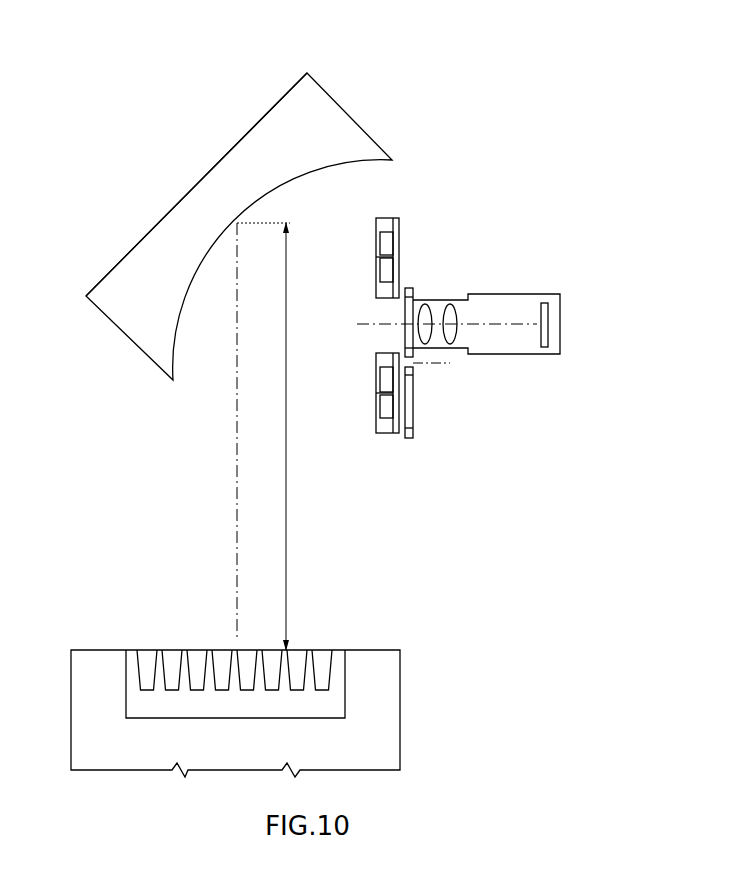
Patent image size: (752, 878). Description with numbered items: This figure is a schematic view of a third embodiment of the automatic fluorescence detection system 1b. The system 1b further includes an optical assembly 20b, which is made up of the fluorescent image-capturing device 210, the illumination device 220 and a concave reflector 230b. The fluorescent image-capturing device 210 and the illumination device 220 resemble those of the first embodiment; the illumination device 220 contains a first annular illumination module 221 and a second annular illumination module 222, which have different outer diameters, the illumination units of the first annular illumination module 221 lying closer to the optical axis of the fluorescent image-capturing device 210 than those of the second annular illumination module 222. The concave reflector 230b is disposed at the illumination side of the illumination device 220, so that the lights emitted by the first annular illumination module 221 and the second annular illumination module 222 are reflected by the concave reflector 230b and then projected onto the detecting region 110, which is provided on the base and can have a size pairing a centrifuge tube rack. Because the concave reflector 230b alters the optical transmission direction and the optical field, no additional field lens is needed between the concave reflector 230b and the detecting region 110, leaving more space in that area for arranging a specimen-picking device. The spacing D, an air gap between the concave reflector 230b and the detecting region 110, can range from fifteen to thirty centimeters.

The optical assembly 20b is at (277, 10).
The concave reflector 230b is at (115, 255).
The fluorescent image-capturing device 210 is at (482, 288).
The illumination device 220 is at (389, 210).
The first annular illumination module 221 is at (370, 272).
The second annular illumination module 222 is at (370, 243).
The automatic fluorescence detection system 1b is at (475, 475).
The detecting region 110 is at (312, 650).
The spacing D is at (263, 436).